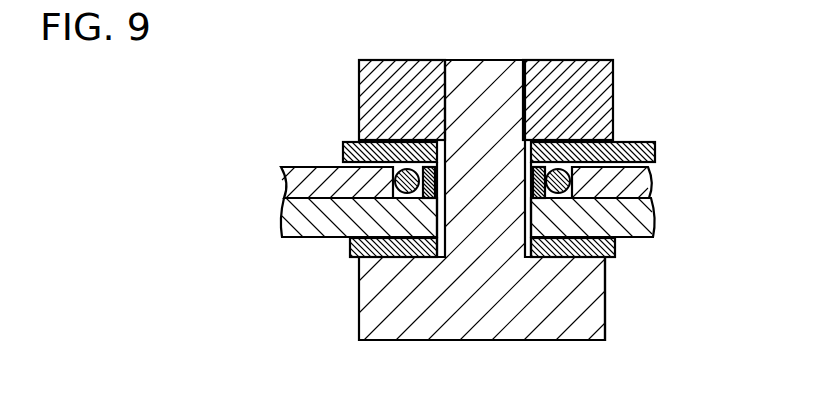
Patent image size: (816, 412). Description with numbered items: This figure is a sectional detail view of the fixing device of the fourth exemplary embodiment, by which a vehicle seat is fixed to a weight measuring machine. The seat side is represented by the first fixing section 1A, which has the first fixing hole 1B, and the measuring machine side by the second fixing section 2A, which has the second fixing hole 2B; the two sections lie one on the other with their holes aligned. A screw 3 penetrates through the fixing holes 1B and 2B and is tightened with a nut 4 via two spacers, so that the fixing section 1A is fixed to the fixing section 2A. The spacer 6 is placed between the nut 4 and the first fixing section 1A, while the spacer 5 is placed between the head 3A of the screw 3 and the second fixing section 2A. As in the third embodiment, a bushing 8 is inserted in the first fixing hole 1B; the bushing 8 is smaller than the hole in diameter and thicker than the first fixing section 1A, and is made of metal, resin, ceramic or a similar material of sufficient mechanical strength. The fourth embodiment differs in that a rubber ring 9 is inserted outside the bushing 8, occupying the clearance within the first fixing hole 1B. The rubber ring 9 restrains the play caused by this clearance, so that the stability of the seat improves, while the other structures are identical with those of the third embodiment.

The screw 3 is at (430, 328).
The head of screw 3A is at (590, 292).
The nut 4 is at (590, 103).
The spacer 6 is at (590, 152).
The spacer 5 is at (615, 253).
The first fixing section 1A is at (322, 176).
The second fixing section 2A is at (327, 215).
The first fixing hole 1B is at (592, 188).
The second fixing hole 2B is at (527, 213).
The rubber ring 9 is at (396, 168).
The bushing 8 is at (424, 197).